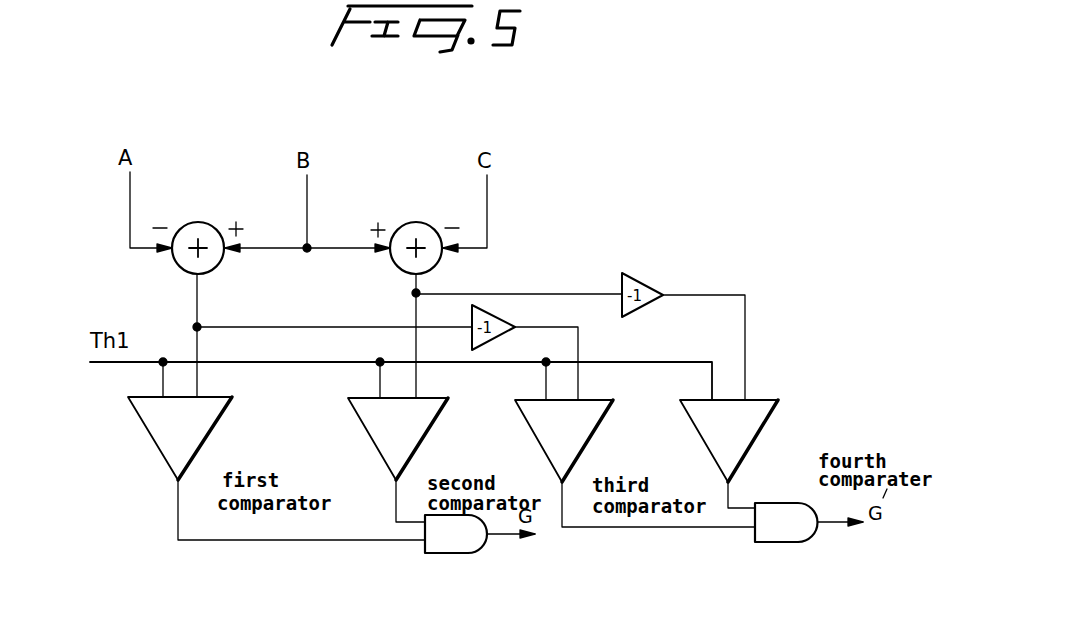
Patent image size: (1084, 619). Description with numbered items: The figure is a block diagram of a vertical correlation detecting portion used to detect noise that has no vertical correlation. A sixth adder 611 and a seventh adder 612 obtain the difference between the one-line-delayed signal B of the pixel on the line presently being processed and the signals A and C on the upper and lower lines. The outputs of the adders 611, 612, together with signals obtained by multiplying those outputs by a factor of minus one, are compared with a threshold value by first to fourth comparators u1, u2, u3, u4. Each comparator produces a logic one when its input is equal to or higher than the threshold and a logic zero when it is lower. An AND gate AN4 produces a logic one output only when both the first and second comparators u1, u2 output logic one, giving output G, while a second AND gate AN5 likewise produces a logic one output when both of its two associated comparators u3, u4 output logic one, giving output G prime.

The sixth adder 611 is at (200, 223).
The seventh adder 612 is at (418, 223).
The first comparator u1 is at (212, 433).
The second comparator u2 is at (432, 435).
The third comparator u3 is at (590, 438).
The fourth comparator u4 is at (753, 440).
The AND gate AN4 is at (456, 534).
The AND gate AN5 is at (786, 522).